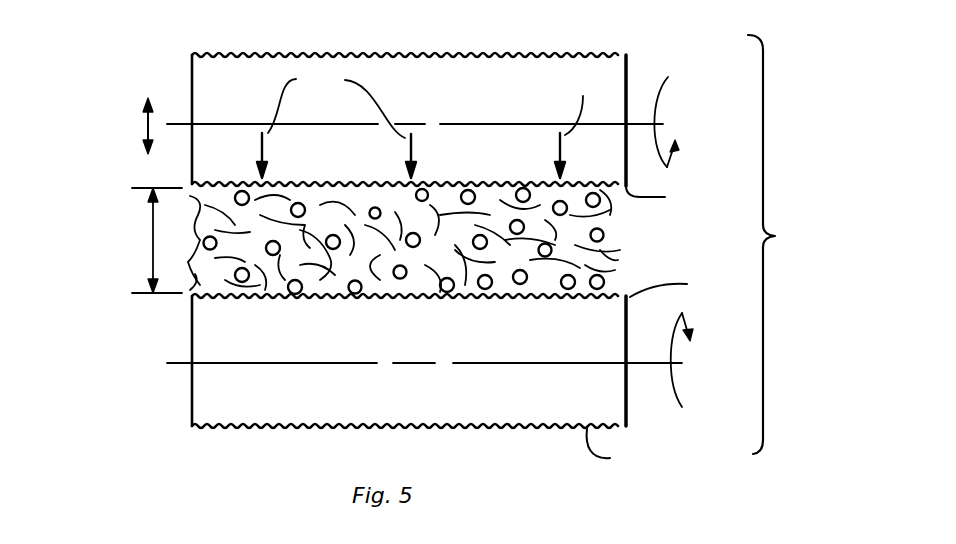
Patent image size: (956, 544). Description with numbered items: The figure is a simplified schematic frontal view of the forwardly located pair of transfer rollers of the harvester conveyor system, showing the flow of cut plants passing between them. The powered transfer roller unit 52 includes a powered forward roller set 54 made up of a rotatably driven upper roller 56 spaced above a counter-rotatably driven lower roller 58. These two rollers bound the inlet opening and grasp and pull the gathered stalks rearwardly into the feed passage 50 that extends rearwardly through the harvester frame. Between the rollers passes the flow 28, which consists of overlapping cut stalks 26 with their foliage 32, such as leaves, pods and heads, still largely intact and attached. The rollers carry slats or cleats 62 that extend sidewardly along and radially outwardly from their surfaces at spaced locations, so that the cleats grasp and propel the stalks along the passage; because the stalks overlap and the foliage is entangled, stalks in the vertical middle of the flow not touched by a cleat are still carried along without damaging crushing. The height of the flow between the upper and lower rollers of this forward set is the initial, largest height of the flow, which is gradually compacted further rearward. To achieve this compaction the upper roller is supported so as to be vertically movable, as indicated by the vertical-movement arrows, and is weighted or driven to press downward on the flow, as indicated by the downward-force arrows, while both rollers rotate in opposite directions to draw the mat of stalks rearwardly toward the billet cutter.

The stalks 26 is at (313, 184).
The flow 28 is at (187, 233).
The foliage 32 is at (486, 207).
The feed passage 50 is at (190, 268).
The powered transfer roller unit 52 is at (806, 126).
The powered forward roller set 54 is at (779, 244).
The upper roller 56 is at (190, 83).
The lower roller 58 is at (192, 398).
The cleats 62 is at (654, 331).